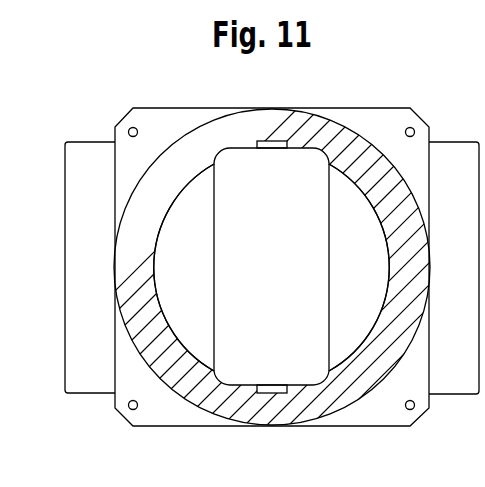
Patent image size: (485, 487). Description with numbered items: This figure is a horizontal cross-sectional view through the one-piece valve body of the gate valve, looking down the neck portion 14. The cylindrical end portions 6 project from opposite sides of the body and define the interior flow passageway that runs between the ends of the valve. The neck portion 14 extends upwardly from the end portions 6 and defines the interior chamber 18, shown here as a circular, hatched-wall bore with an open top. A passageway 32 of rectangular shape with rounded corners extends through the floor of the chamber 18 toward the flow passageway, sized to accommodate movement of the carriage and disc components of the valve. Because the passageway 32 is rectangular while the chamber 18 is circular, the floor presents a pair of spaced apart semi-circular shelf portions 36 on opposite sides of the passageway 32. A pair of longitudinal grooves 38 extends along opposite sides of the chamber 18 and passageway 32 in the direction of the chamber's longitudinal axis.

The cylindrical end portions 6 is at (90, 142).
The neck portion 14 is at (384, 153).
The interior chamber 18 is at (198, 205).
The passageway 32 is at (247, 178).
The shelf portions 36 is at (198, 270).
The longitudinal grooves 38 is at (270, 141).